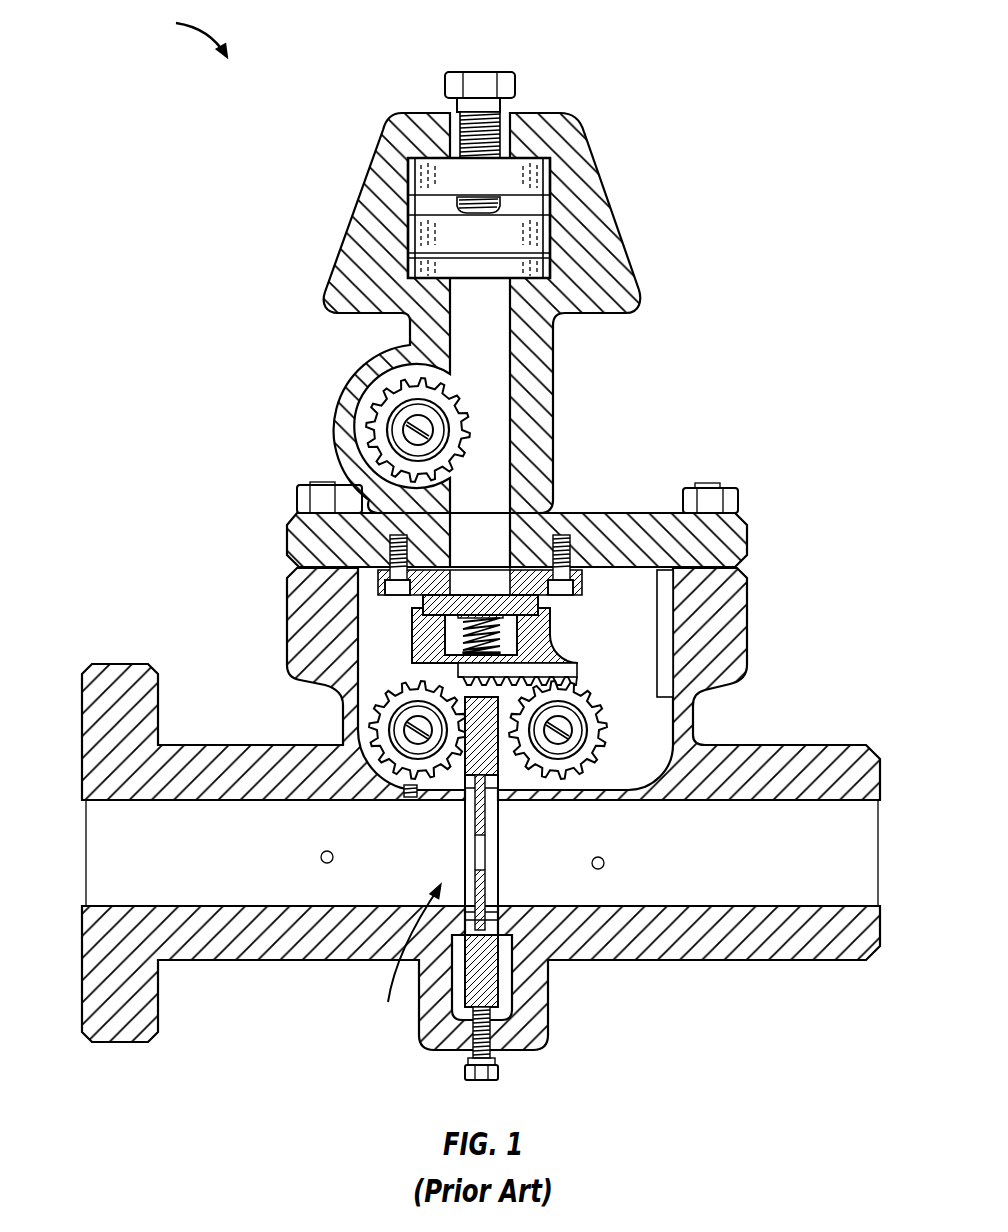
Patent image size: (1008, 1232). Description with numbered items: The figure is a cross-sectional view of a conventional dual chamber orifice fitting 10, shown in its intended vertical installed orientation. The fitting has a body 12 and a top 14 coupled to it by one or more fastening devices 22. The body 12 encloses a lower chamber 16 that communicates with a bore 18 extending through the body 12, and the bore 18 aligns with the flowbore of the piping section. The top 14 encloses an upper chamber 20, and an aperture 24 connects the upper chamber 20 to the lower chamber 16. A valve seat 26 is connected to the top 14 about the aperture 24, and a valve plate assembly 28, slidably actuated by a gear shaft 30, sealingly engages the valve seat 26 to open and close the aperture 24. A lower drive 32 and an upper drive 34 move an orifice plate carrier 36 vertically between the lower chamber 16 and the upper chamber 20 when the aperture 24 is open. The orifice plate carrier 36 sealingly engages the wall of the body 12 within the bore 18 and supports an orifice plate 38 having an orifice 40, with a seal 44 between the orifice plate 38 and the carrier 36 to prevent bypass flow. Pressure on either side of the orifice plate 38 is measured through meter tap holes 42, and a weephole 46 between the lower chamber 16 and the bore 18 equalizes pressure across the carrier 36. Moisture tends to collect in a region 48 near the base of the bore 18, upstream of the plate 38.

The dual chamber orifice fitting 10 is at (185, 32).
The body 12 is at (300, 620).
The top 14 is at (537, 430).
The lower chamber 16 is at (637, 627).
The bore 18 is at (202, 870).
The upper chamber 20 is at (480, 384).
The fastening devices 22 is at (738, 500).
The aperture 24 is at (450, 592).
The valve seat 26 is at (573, 573).
The valve plate assembly 28 is at (547, 638).
The gear shaft 30 is at (585, 695).
The lower drive 32 is at (370, 723).
The upper drive 34 is at (377, 412).
The orifice plate carrier 36 is at (492, 962).
The orifice plate 38 is at (484, 890).
The orifice 40 is at (480, 865).
The meter tap holes 42 is at (327, 851).
The seal 44 is at (490, 790).
The weephole 46 is at (415, 798).
The region 48 is at (410, 960).